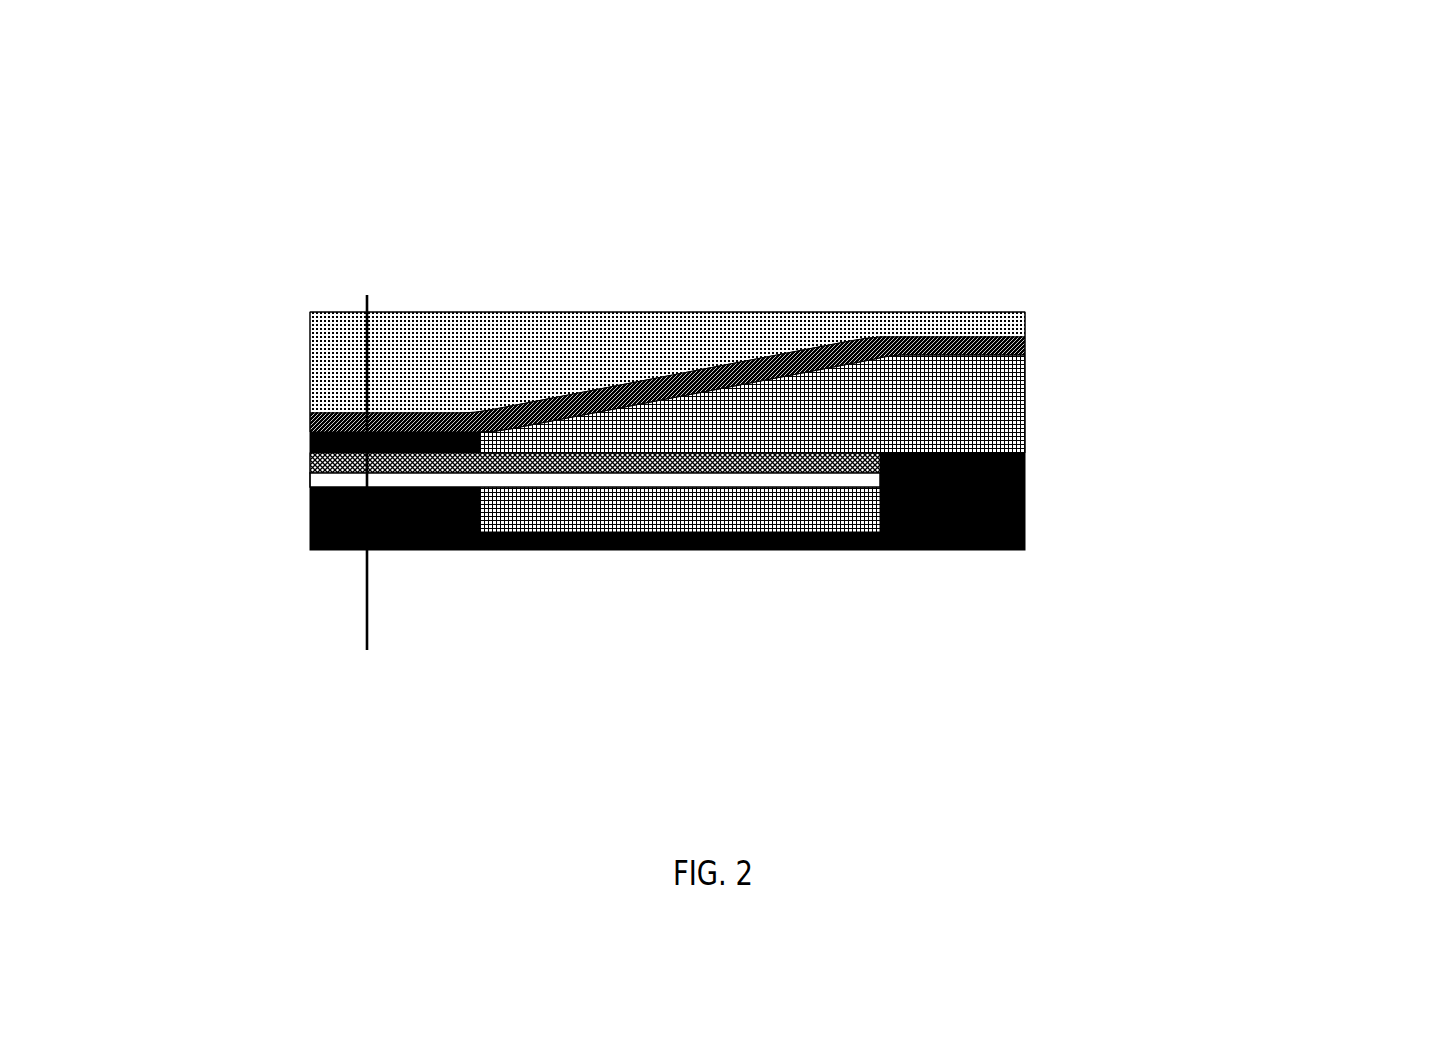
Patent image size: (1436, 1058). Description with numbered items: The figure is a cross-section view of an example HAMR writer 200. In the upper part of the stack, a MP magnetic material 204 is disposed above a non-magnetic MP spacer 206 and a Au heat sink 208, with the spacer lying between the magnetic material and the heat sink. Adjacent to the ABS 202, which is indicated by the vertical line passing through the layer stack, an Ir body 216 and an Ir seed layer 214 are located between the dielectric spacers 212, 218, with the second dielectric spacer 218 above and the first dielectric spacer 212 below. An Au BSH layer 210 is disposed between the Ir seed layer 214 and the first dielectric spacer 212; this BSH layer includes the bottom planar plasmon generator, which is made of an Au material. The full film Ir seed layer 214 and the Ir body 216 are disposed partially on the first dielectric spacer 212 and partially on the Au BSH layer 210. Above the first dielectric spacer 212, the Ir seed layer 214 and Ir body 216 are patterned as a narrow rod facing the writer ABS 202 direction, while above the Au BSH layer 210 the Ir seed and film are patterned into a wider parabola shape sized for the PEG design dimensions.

The HAMR writer 200 is at (1223, 78).
The ABS 202 is at (379, 452).
The MP magnetic material 204 is at (562, 312).
The non-magnetic MP spacer 206 is at (1027, 345).
The Au heat sink 208 is at (1020, 405).
The Au BSH layer 210 is at (877, 512).
The first dielectric spacer 212 is at (305, 518).
The Ir seed layer 214 is at (305, 481).
The Ir body 216 is at (305, 462).
The second dielectric spacer 218 is at (305, 432).